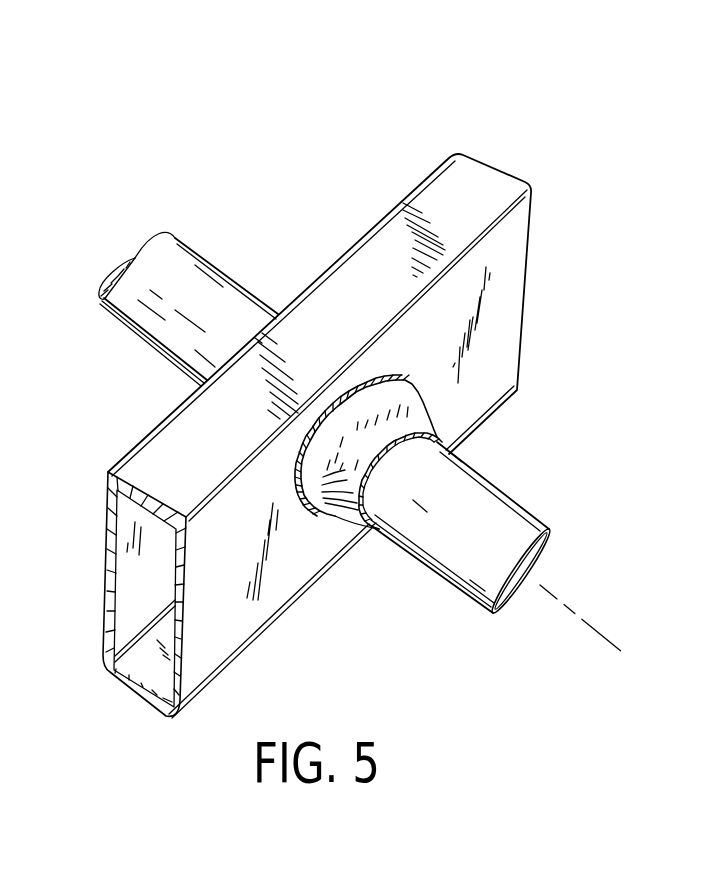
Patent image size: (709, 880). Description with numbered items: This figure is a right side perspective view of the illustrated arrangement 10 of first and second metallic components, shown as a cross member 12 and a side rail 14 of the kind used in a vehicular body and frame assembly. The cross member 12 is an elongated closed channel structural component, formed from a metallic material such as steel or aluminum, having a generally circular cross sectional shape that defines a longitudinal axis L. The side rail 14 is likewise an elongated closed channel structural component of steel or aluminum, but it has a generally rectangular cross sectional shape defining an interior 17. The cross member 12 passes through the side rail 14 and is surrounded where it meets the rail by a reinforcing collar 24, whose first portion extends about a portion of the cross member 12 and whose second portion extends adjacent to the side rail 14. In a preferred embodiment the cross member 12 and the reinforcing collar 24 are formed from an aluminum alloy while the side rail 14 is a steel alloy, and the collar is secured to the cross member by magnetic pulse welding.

The fastening assembly 10 is at (585, 124).
The cross member 12 is at (527, 518).
The side rail 14 is at (438, 212).
The interior 17 is at (127, 597).
The reinforcing collar 24 is at (333, 513).
The longitudinal axis L is at (558, 604).